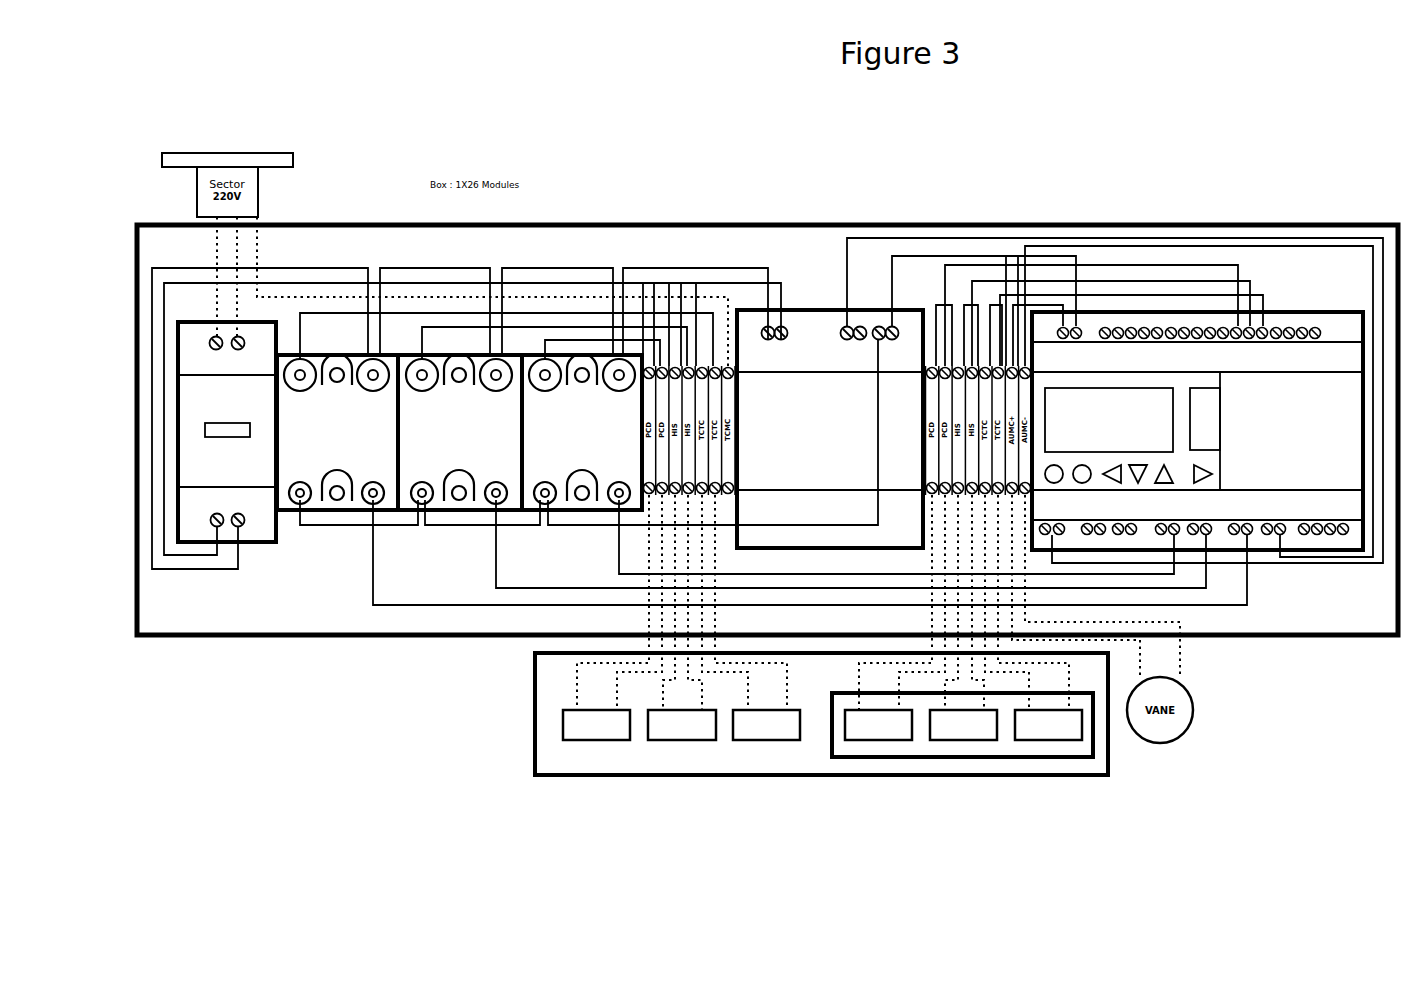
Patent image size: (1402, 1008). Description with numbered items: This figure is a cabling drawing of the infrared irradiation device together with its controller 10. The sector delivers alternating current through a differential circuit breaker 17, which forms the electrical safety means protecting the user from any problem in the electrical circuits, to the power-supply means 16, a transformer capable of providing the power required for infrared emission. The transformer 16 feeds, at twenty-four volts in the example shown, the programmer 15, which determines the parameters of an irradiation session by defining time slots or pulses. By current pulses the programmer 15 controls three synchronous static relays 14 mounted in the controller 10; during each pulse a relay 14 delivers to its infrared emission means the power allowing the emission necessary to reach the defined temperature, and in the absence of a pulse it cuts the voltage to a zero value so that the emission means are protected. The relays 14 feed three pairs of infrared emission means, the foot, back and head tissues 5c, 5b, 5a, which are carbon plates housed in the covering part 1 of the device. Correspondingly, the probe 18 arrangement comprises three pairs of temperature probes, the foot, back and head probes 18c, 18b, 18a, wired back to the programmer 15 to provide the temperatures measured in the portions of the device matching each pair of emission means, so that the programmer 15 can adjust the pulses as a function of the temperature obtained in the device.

The covering part 1 is at (535, 748).
The infrared emission means (head tissues) 5a is at (748, 740).
The infrared emission means (back tissues) 5b is at (672, 740).
The infrared emission means (foot tissues) 5c is at (597, 740).
The controller 10 is at (688, 222).
The synchronous static relay 14 is at (532, 350).
The programmer 15 is at (1323, 312).
The power-supply means 16 is at (806, 310).
The differential circuit breaker 17 is at (265, 542).
The temperature probe 18 is at (1062, 757).
The head temperature probe 18a is at (1048, 740).
The back temperature probe 18b is at (963, 740).
The foot temperature probe 18c is at (885, 740).